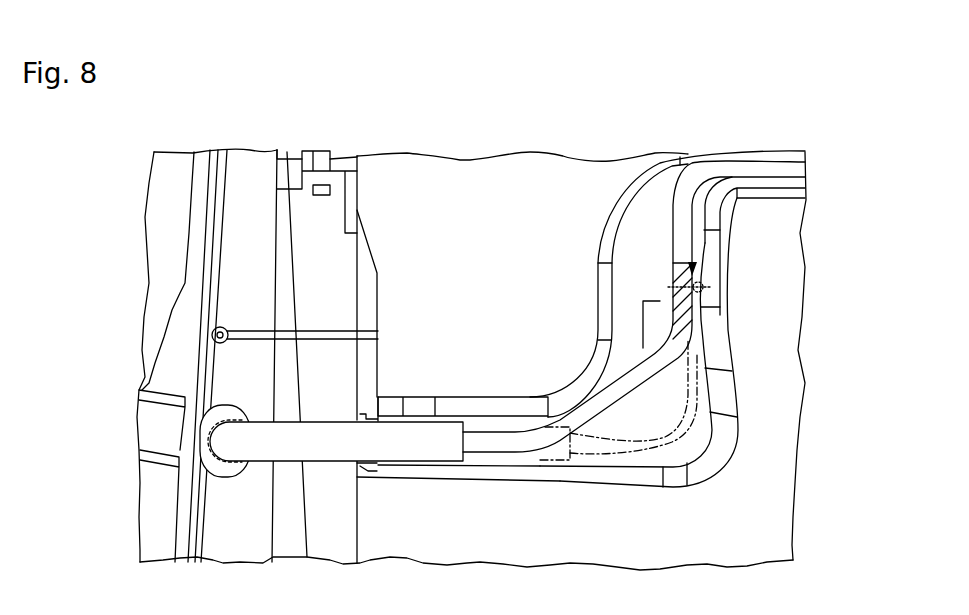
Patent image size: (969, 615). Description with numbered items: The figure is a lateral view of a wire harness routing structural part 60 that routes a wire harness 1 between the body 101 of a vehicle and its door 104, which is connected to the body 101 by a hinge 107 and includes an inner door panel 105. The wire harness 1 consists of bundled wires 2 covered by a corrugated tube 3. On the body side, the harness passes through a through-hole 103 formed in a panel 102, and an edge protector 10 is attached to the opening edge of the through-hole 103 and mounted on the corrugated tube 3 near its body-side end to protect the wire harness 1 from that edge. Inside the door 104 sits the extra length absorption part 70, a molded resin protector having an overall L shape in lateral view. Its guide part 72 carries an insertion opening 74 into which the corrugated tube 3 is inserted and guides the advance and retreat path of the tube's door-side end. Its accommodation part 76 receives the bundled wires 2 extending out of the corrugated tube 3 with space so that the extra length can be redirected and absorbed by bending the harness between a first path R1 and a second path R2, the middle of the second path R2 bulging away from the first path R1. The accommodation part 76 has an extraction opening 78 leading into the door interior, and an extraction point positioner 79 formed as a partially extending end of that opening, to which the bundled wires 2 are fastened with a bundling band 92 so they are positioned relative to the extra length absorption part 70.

The wire harness 1 is at (318, 460).
The bundled wires 2 is at (677, 190).
The corrugated tube 3 is at (421, 457).
The edge protector 10 is at (234, 477).
The wire harness routing structural part 60 is at (367, 393).
The extra length absorption part 70 is at (478, 470).
The guide part 72 is at (436, 399).
The insertion opening 74 is at (358, 420).
The accommodation part 76 is at (688, 476).
The extraction opening 78 is at (651, 301).
The extraction point positioner 79 is at (695, 267).
The bundling band 92 is at (712, 288).
The body 101 is at (165, 208).
The panel 102 is at (227, 540).
The through-hole 103 is at (237, 416).
The door 104 is at (493, 172).
The inner door panel 105 is at (559, 166).
The hinge 107 is at (290, 163).
The first path R1 is at (592, 393).
The second path R2 is at (680, 440).